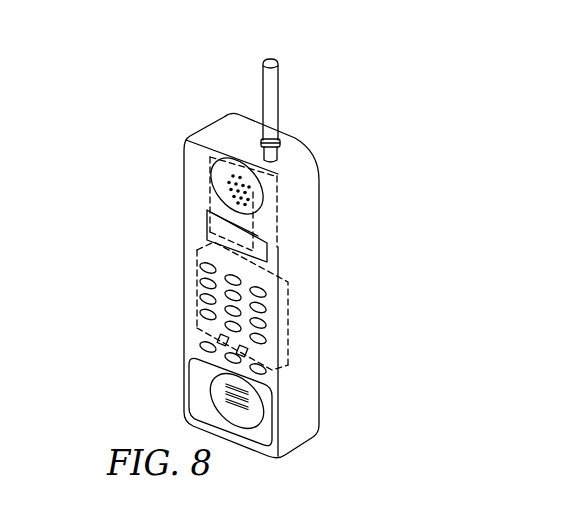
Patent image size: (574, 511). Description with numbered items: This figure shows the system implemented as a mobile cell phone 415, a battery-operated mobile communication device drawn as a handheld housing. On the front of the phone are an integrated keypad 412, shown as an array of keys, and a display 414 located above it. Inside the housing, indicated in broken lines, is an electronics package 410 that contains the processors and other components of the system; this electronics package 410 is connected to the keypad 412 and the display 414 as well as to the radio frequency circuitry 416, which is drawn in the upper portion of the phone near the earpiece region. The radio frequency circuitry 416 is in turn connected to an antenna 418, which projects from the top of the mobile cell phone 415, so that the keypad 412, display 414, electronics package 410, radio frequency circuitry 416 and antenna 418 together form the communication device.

The electronics package 410 is at (283, 332).
The keypad 412 is at (208, 303).
The display 414 is at (207, 238).
The mobile cell phone 415 is at (314, 385).
The radio frequency circuitry 416 is at (210, 198).
The antenna 418 is at (277, 97).